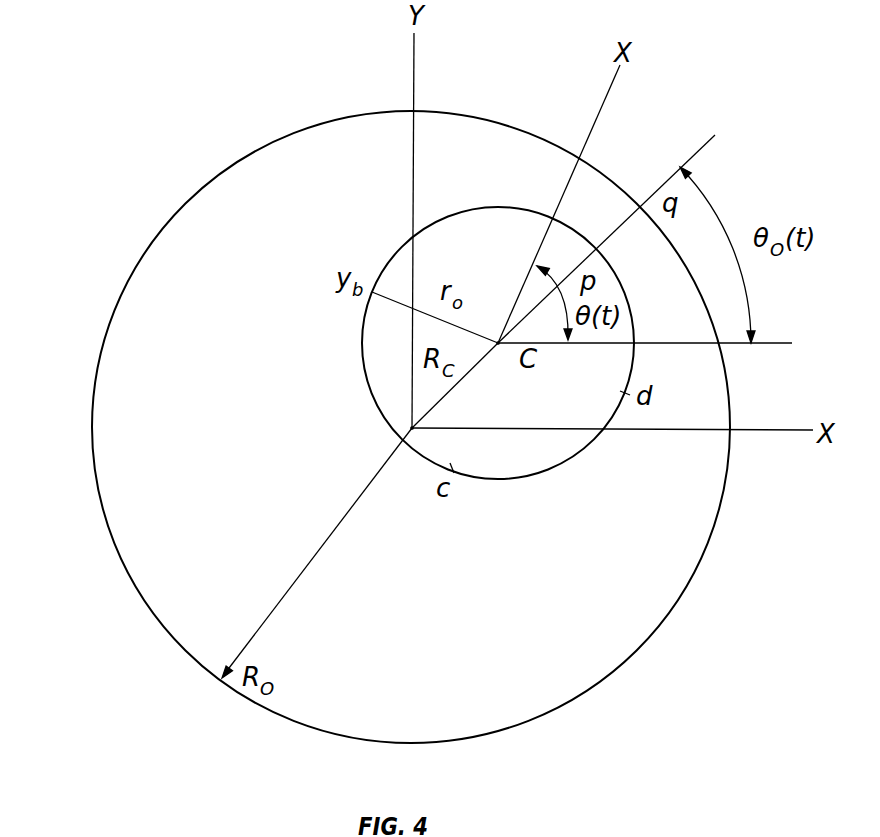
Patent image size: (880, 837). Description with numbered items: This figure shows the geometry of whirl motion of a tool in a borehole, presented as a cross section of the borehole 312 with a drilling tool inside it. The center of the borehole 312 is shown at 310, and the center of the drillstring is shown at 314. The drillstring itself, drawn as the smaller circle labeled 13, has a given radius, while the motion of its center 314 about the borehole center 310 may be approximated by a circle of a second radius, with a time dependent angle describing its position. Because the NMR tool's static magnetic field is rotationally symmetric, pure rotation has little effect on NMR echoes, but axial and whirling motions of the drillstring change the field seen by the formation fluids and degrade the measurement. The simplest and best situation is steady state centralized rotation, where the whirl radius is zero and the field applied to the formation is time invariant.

The center of the borehole 310 is at (558, 231).
The borehole 312 is at (386, 427).
The center of the drillstring 314 is at (644, 241).
The rotating circle (radius r_o) 13 is at (498, 360).